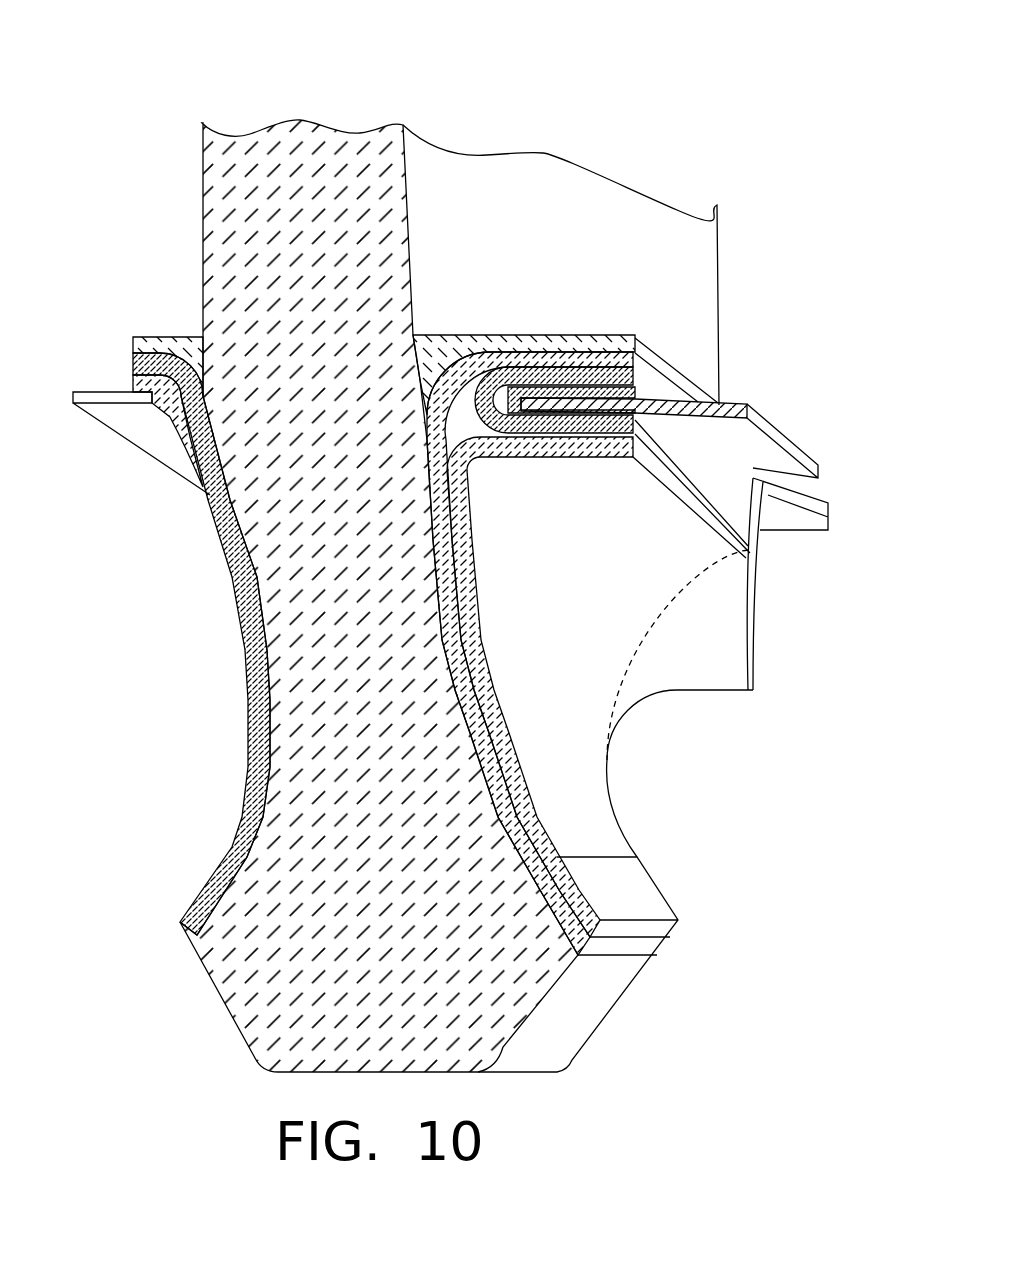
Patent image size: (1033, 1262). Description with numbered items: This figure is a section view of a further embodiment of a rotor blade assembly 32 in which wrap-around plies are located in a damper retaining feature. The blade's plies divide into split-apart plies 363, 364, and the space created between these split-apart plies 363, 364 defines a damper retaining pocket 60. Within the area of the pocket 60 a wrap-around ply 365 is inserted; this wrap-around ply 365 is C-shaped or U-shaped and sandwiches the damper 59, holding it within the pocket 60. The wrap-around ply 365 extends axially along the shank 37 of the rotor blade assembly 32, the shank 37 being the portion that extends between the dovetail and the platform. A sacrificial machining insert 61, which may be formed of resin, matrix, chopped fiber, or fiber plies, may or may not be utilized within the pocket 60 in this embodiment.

The rotor blade assembly 32 is at (712, 76).
The shank 37 is at (510, 606).
The damper 59 is at (746, 403).
The damper retaining pocket 60 is at (640, 391).
The machining insert 61 is at (517, 400).
The split-apart ply 363 is at (570, 355).
The split-apart ply 364 is at (540, 447).
The wrap-around ply 365 is at (500, 377).